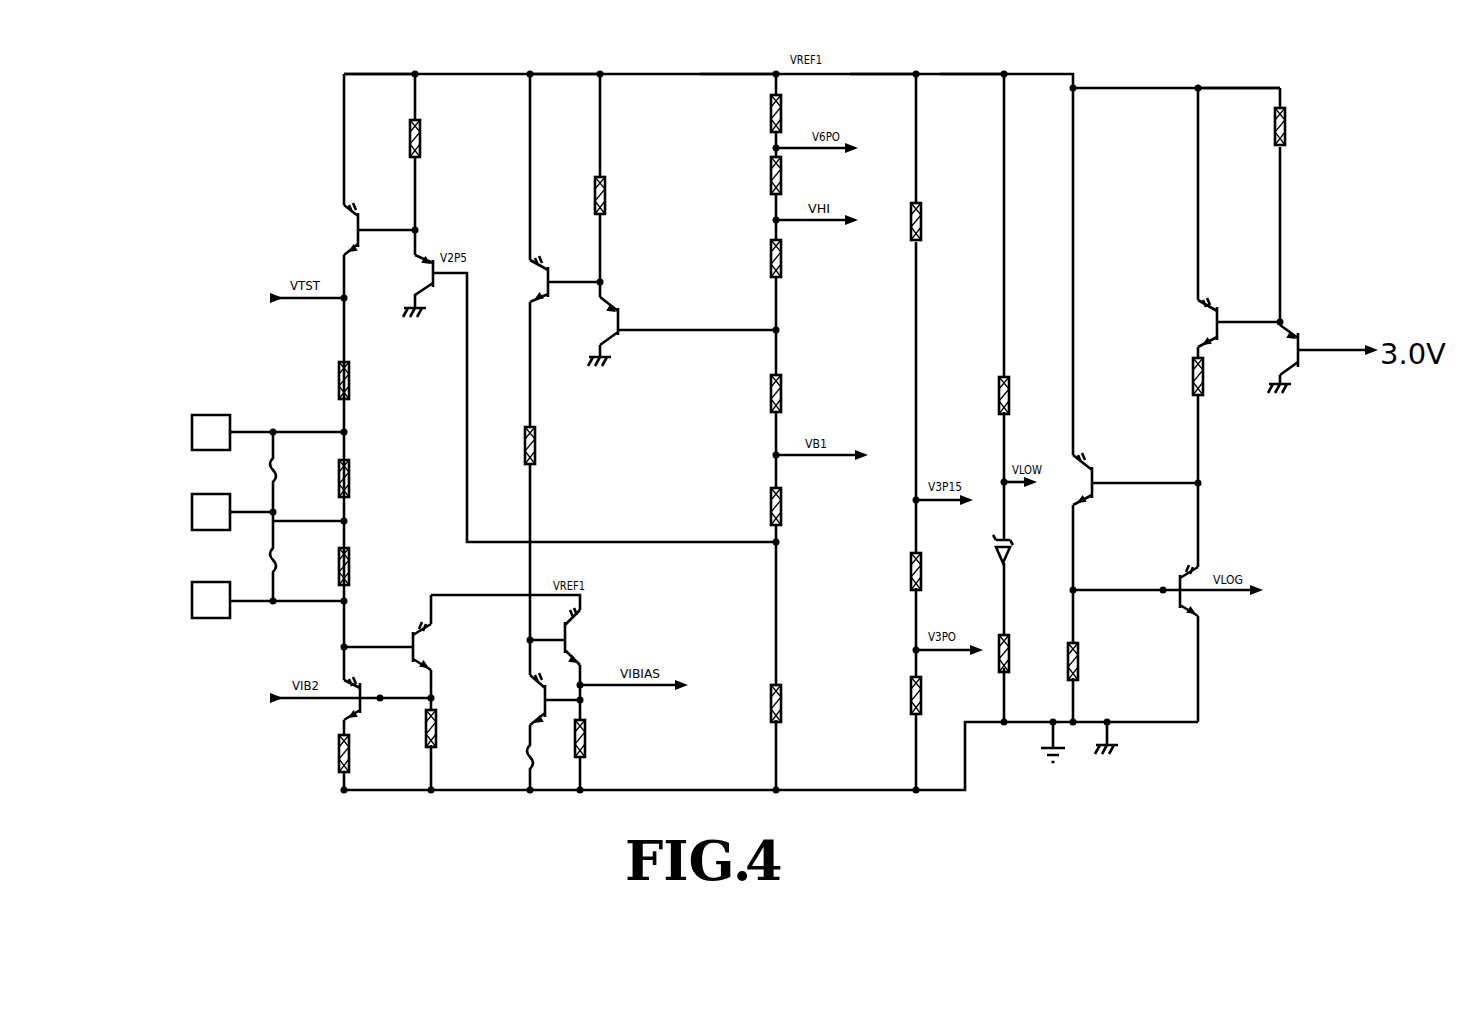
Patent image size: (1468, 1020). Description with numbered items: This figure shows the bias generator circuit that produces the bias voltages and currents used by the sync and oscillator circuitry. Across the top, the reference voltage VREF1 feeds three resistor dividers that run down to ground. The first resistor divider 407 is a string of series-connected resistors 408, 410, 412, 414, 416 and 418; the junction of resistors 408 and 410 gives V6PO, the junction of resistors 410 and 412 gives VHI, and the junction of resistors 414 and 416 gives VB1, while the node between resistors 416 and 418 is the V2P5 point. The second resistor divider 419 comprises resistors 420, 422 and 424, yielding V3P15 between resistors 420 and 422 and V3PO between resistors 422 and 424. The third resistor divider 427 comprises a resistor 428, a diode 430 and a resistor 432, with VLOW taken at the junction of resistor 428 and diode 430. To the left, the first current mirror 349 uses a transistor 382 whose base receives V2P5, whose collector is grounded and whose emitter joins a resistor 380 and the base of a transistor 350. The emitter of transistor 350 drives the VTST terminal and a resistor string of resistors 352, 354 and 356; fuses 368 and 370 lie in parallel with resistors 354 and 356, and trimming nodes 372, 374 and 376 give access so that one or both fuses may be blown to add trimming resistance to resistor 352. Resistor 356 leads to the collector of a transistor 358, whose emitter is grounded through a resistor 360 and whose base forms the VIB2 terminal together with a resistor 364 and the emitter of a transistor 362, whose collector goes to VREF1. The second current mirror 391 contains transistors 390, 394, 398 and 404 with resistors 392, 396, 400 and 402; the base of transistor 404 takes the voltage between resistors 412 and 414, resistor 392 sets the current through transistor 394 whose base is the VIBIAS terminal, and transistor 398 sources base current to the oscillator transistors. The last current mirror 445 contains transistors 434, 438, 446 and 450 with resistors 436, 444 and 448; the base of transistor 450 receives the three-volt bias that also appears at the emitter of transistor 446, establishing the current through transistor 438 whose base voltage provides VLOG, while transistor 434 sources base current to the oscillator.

The current mirror 349 is at (408, 68).
The transistor 350 is at (345, 230).
The resistor 352 is at (350, 376).
The resistor 354 is at (350, 478).
The resistor 356 is at (350, 568).
The transistor 358 is at (345, 716).
The resistor 360 is at (350, 752).
The transistor 362 is at (425, 630).
The resistor 364 is at (437, 726).
The fuse 368 is at (275, 456).
The fuse 370 is at (277, 585).
The trimming node 372 is at (192, 418).
The trimming node 374 is at (210, 494).
The trimming node 376 is at (212, 582).
The resistor 380 is at (421, 136).
The transistor 382 is at (430, 270).
The transistor 390 is at (535, 282).
The current mirror 391 is at (563, 68).
The resistor 392 is at (536, 442).
The transistor 394 is at (538, 698).
The resistor 396 is at (526, 758).
The transistor 398 is at (578, 640).
The resistor 400 is at (586, 740).
The resistor 402 is at (606, 192).
The transistor 404 is at (612, 320).
The resistor divider 407 is at (774, 68).
The resistor 408 is at (770, 115).
The resistor 410 is at (770, 178).
The resistor 412 is at (770, 258).
The resistor 414 is at (770, 394).
The resistor 416 is at (770, 506).
The resistor 418 is at (770, 704).
The resistor divider 419 is at (914, 68).
The resistor 420 is at (922, 218).
The resistor 422 is at (912, 572).
The resistor 424 is at (912, 695).
The resistor divider 427 is at (1003, 68).
The resistor 428 is at (1010, 395).
The diode 430 is at (1012, 552).
The resistor 432 is at (1010, 655).
The transistor 434 is at (1078, 472).
The resistor 436 is at (1079, 665).
The transistor 438 is at (1178, 606).
The resistor 444 is at (1192, 377).
The current mirror 445 is at (1242, 84).
The transistor 446 is at (1196, 324).
The resistor 448 is at (1286, 134).
The transistor 450 is at (1288, 336).